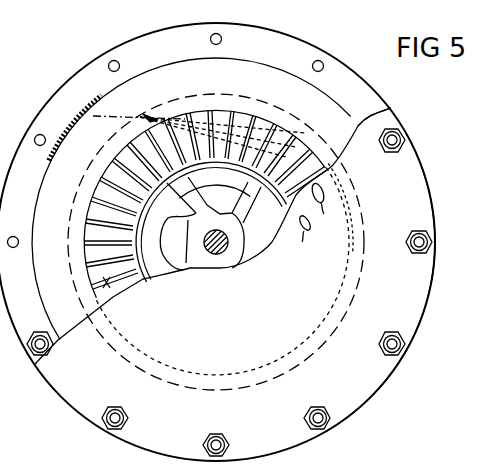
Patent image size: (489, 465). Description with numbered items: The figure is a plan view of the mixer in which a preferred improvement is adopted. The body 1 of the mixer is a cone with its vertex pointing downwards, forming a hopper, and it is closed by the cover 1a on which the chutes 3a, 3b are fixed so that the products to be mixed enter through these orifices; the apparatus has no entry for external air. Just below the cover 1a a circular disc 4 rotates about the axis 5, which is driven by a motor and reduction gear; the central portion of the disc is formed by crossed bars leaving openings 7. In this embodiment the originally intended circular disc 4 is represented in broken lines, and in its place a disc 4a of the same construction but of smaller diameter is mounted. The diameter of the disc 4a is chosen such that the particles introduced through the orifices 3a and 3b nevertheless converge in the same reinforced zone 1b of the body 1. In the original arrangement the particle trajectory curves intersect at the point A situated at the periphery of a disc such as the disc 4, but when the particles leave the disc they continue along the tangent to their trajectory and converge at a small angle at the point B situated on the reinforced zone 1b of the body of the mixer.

The body of the mixer 1 is at (63, 88).
The cover 1a is at (430, 290).
The reinforced zone 1b is at (66, 138).
The chute 3a is at (302, 242).
The chute 3b is at (324, 214).
The circular disc 4 is at (287, 103).
The disc 4a is at (391, 108).
The axis 5 is at (215, 225).
The openings 7 is at (178, 226).
The point A is at (206, 135).
The point B is at (134, 129).